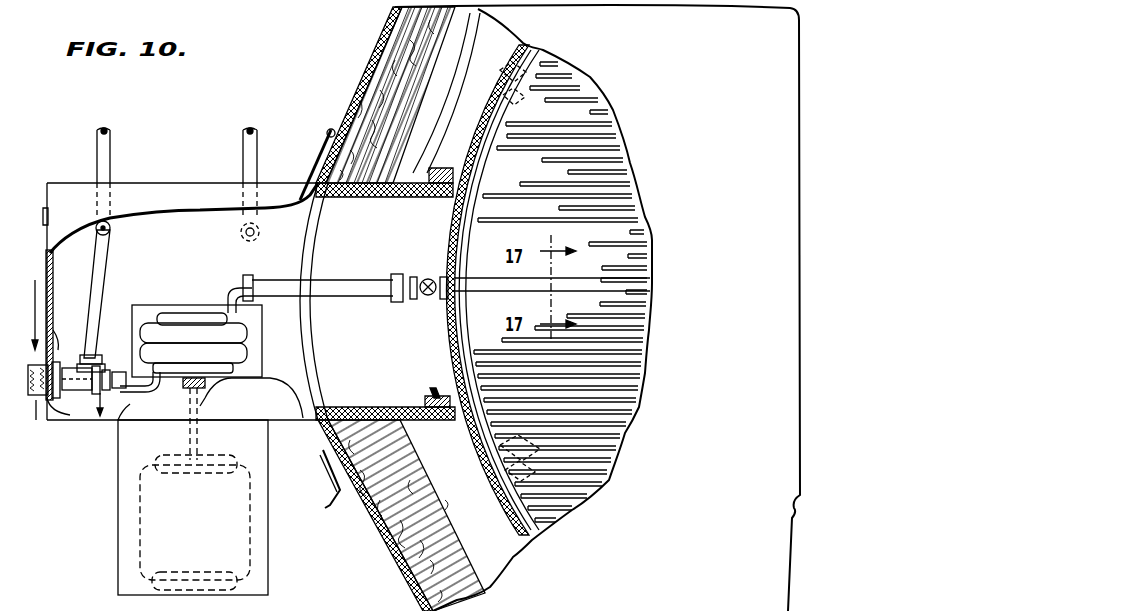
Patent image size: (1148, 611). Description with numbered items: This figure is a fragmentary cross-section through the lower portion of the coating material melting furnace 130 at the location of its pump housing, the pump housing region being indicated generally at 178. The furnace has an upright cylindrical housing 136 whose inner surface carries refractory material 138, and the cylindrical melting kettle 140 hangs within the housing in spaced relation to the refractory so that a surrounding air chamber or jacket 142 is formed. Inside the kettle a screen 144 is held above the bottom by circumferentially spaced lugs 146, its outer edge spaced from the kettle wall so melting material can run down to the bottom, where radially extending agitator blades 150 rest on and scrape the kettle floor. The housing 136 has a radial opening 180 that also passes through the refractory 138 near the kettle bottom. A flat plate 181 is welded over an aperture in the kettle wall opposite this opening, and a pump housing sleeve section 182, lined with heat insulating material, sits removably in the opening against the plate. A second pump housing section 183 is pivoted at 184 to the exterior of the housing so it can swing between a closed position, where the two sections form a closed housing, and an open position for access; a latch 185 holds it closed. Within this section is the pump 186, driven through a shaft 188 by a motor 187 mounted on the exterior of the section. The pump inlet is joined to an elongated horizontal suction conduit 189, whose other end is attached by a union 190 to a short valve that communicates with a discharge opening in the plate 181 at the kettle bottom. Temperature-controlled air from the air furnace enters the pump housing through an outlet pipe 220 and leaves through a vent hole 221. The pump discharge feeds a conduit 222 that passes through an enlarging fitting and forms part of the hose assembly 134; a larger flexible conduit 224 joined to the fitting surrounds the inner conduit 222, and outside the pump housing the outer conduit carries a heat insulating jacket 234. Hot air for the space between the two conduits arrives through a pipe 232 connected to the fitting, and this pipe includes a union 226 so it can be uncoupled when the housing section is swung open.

The coating material melting furnace 130 is at (340, 78).
The hose assembly 134 is at (58, 330).
The furnace housing 136 is at (376, 540).
The refractory material 138 is at (400, 592).
The melting kettle 140 is at (488, 138).
The air chamber or jacket 142 is at (476, 126).
The screen 144 is at (628, 460).
The lugs 146 is at (520, 80).
The blades 150 is at (586, 298).
The control housing 178 is at (172, 148).
The radial opening 180 is at (398, 421).
The flat plate 181 is at (458, 246).
The pump housing sleeve section 182 is at (430, 182).
The second pump housing section 183 is at (430, 398).
The pivot 184 is at (328, 130).
The latch 185 is at (332, 480).
The pump 186 is at (44, 214).
The motor 187 is at (205, 536).
The shaft 188 is at (196, 410).
The suction conduit 189 is at (340, 296).
The union 190 is at (405, 302).
The outlet pipe 220 is at (260, 158).
The vent hole 221 is at (98, 418).
The conduit 222 is at (96, 362).
The flexible conduit 224 is at (66, 360).
The union 226 is at (112, 236).
The pipe 232 is at (108, 136).
The jacket 234 is at (38, 420).